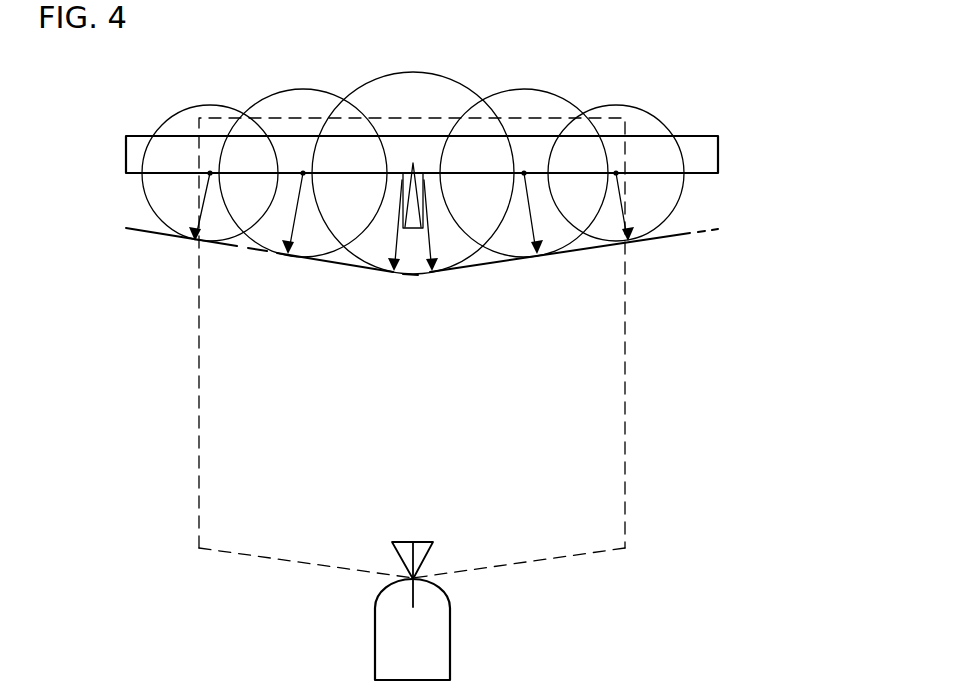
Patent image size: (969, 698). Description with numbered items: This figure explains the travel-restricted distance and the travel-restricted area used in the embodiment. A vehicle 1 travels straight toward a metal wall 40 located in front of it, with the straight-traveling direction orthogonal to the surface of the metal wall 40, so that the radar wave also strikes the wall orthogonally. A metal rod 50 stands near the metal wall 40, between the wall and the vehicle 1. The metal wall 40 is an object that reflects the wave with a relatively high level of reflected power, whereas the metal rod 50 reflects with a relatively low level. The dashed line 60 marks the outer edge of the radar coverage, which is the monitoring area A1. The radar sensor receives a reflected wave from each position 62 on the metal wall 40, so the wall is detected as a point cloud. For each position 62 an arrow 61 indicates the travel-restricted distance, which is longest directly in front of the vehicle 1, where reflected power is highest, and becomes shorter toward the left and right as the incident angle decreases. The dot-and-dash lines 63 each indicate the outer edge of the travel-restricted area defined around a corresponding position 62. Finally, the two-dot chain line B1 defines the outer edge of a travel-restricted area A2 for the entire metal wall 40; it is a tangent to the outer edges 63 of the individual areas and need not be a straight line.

The vehicle 1 is at (450, 637).
The metal wall 40 is at (717, 153).
The metal rod 50 is at (423, 177).
The dashed line 60 is at (607, 498).
The arrows 61 is at (293, 210).
The position on the metal wall 62 is at (292, 250).
The dot-and-dash lines 63 is at (303, 89).
The monitoring area A1 is at (578, 428).
The travel-restricted area A2 is at (690, 200).
The two-dot chain line B1 is at (670, 237).